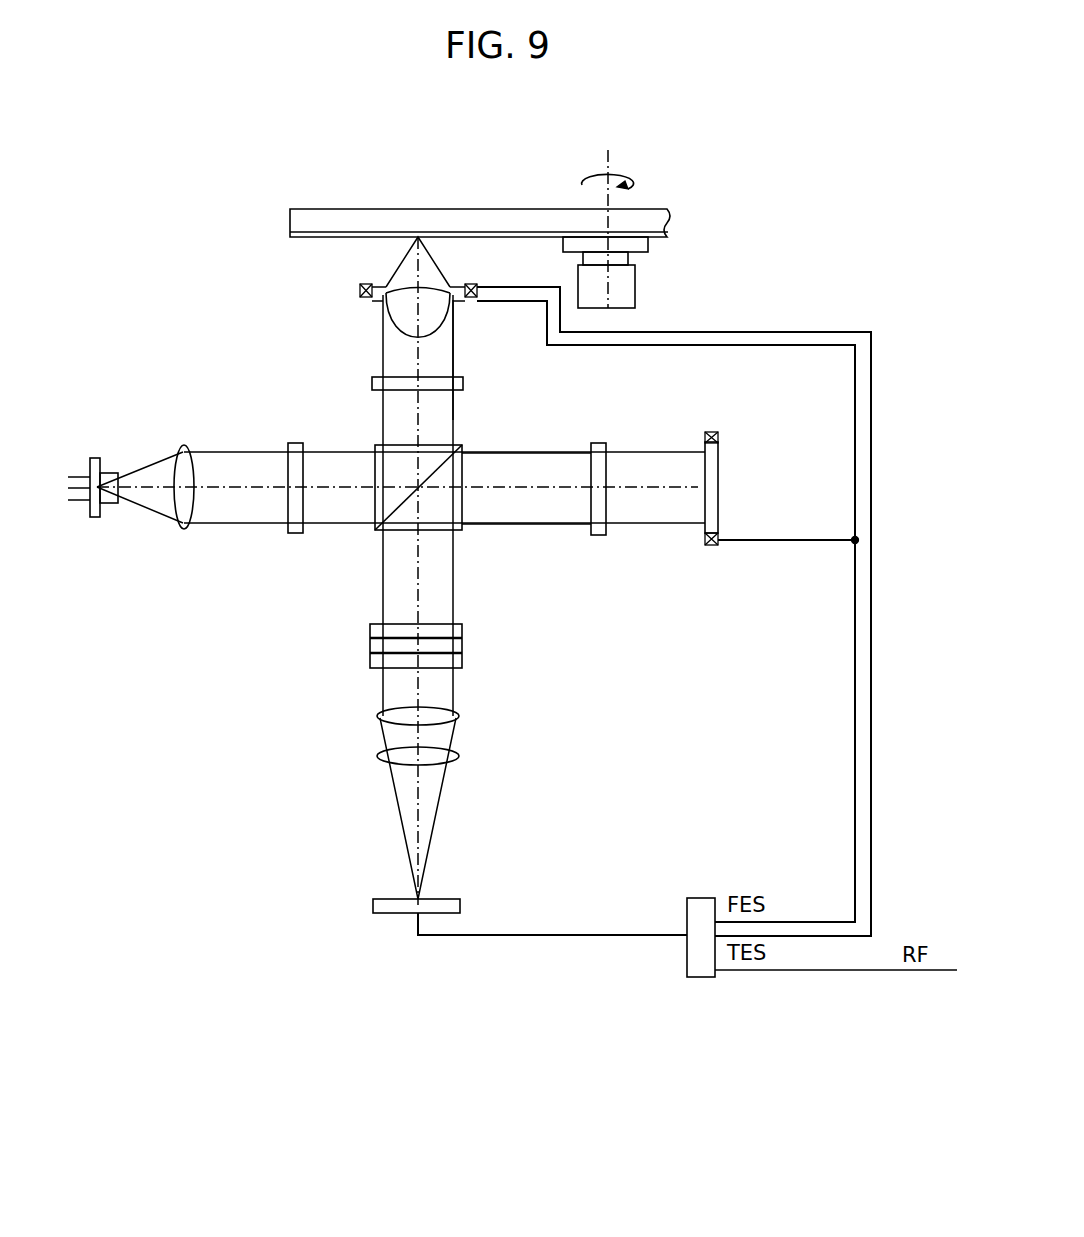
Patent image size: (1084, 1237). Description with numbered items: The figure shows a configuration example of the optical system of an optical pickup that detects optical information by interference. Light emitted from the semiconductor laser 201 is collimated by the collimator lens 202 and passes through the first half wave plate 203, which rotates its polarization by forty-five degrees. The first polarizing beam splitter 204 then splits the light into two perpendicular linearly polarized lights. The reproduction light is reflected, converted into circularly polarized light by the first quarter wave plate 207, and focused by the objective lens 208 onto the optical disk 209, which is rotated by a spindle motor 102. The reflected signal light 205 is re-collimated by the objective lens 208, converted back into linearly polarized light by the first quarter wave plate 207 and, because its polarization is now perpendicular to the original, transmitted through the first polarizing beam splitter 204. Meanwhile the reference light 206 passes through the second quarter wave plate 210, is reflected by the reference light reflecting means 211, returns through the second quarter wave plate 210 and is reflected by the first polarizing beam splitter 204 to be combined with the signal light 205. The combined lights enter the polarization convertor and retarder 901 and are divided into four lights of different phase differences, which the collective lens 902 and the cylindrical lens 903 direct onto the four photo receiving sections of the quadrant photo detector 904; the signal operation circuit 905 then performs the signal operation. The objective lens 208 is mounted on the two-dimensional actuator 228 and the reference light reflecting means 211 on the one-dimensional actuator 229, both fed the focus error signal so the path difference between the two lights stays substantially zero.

The spindle motor 102 is at (637, 278).
The semiconductor laser 201 is at (92, 460).
The collimator lens 202 is at (185, 446).
The first half wave plate 203 is at (298, 443).
The first polarizing beam splitter 204 is at (373, 460).
The signal light 205 is at (453, 340).
The reference light 206 is at (517, 452).
The first quarter wave plate 207 is at (385, 376).
The objective lens 208 is at (400, 313).
The optical disk 209 is at (290, 220).
The second quarter wave plate 210 is at (597, 443).
The reference light reflecting means 211 is at (720, 467).
The two-dimensional actuator 228 is at (468, 292).
The one-dimensional actuator 229 is at (718, 434).
The polarization convertor and retarder 901 is at (462, 642).
The collective lens 902 is at (460, 713).
The cylindrical lens 903 is at (460, 760).
The photo detector 904 is at (373, 906).
The signal operation circuit 905 is at (700, 977).